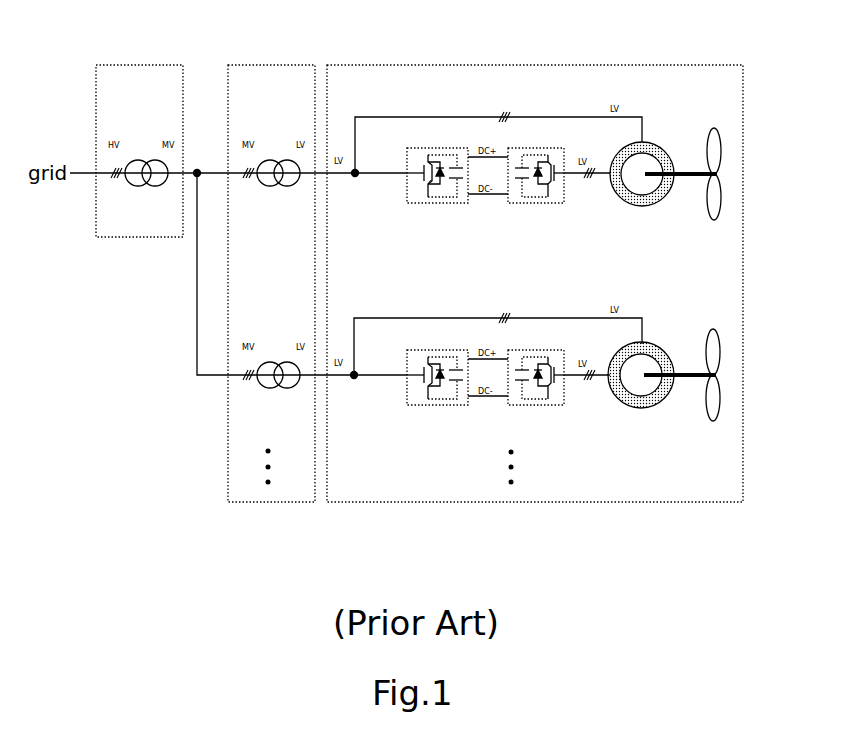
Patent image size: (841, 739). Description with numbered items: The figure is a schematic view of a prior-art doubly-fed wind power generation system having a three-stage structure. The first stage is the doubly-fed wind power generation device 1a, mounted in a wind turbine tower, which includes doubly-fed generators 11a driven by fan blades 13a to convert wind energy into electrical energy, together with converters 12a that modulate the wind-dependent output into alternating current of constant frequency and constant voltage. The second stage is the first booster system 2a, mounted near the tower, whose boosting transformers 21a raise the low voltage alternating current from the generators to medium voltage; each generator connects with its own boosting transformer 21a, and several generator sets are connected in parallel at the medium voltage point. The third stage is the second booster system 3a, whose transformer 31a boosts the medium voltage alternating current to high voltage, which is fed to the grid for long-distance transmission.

The doubly-fed wind power generation device 1a is at (680, 66).
The doubly-fed generator 11a is at (664, 148).
The converter 12a is at (446, 148).
The fan blades 13a is at (720, 172).
The first booster system 2a is at (237, 65).
The boosting transformer 21a is at (280, 160).
The second booster system 3a is at (107, 65).
The transformer 31a is at (150, 160).